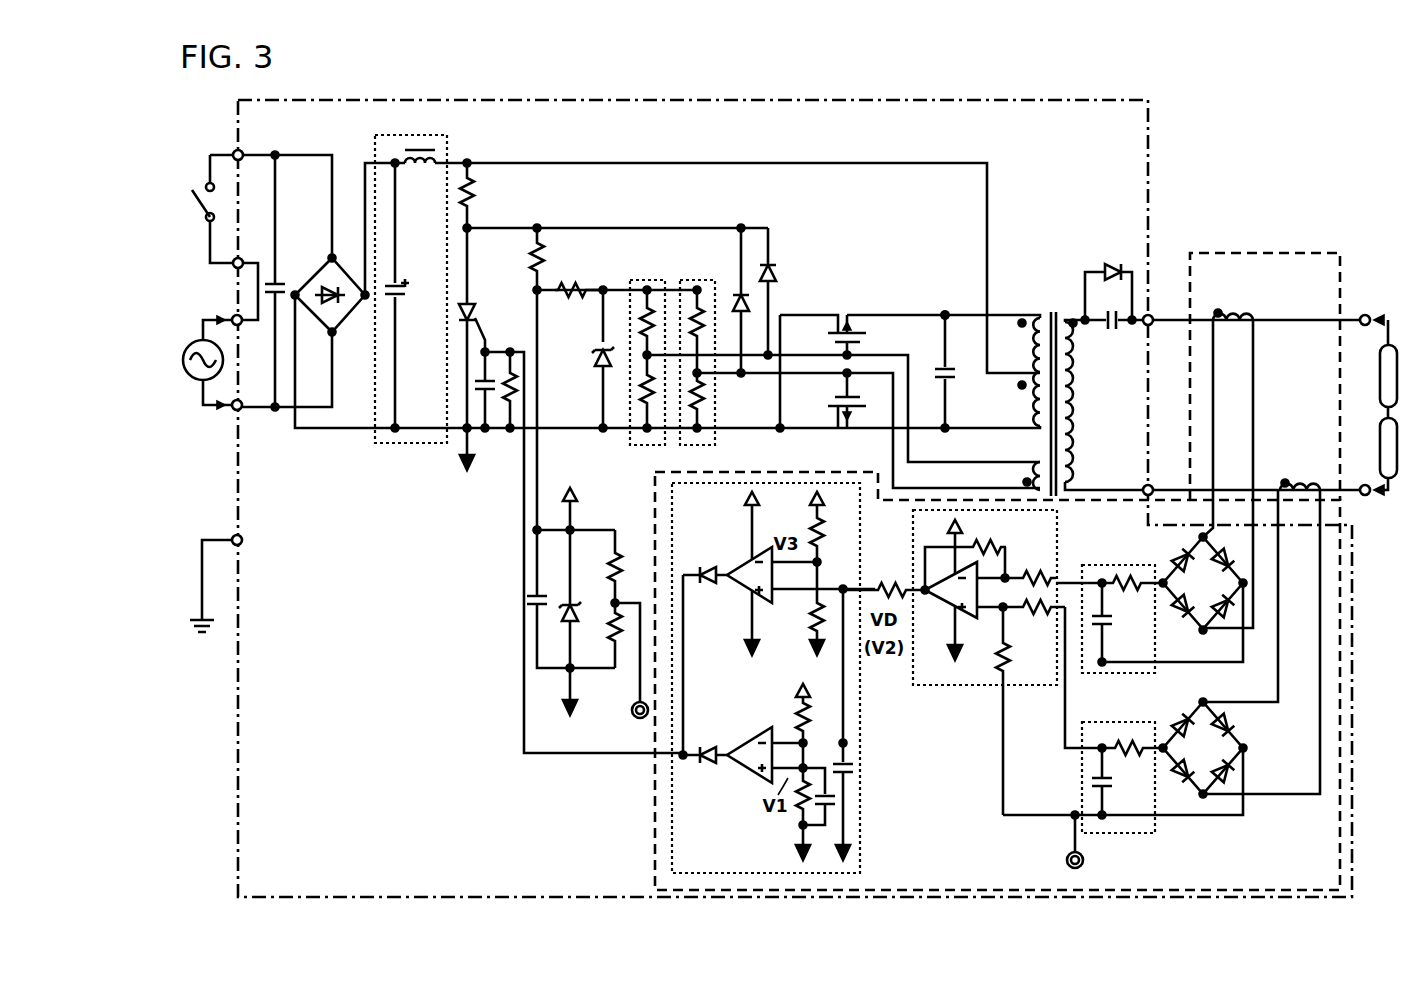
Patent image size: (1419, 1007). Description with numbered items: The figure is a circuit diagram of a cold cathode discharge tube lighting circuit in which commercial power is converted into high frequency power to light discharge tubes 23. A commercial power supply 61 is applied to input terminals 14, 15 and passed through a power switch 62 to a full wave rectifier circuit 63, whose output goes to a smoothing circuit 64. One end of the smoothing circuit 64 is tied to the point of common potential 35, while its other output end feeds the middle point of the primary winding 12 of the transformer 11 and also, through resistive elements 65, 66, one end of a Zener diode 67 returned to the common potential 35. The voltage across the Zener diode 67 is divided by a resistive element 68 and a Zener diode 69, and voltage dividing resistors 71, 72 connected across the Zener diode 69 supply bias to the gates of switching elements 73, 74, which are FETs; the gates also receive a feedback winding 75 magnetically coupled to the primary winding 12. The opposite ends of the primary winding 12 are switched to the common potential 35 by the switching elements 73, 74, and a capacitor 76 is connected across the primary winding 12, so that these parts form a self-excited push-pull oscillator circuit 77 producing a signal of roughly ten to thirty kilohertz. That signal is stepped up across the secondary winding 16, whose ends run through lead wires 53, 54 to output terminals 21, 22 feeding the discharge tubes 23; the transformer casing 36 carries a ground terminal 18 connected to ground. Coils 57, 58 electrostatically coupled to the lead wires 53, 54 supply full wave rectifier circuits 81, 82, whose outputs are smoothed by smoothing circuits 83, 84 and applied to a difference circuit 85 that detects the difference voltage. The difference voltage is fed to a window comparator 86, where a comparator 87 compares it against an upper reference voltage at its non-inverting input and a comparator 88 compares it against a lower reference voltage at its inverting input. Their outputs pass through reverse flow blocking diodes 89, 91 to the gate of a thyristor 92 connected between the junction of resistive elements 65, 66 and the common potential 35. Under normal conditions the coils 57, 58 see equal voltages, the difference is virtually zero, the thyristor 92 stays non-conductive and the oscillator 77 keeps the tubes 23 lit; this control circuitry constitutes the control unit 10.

The control unit 10 is at (655, 800).
The leakage transformer 11 is at (1053, 310).
The primary winding 12 is at (1030, 318).
The input terminal 14 is at (244, 327).
The input terminal 15 is at (243, 412).
The secondary winding 16 is at (1082, 424).
The ground terminal 18 is at (233, 535).
The output terminal 21 is at (1367, 313).
The output terminal 22 is at (1368, 508).
The discharge tubes 23 is at (1378, 382).
The point of common potential 35 is at (472, 440).
The transformer casing 36 is at (1152, 210).
The lead wire 53 is at (1290, 322).
The lead wire 54 is at (1330, 486).
The coil 57 is at (1228, 312).
The coil 58 is at (1297, 481).
The commercial power supply 61 is at (192, 380).
The power switch 62 is at (205, 228).
The full wave rectifier circuit 63 is at (340, 312).
The smoothing circuit 64 is at (428, 445).
The resistive element 65 is at (478, 193).
The resistive element 66 is at (532, 258).
The Zener diode 67 is at (575, 603).
The resistive element 68 is at (575, 288).
The Zener diode 69 is at (598, 374).
The voltage dividing resistor 71 is at (652, 285).
The voltage dividing resistor 72 is at (703, 283).
The switching element 73 is at (845, 315).
The switching element 74 is at (850, 440).
The feedback winding 75 is at (1036, 462).
The capacitor 76 is at (953, 380).
The self-excited oscillator circuit 77 is at (935, 303).
The full wave rectifier circuit 81 is at (1195, 617).
The full wave rectifier circuit 82 is at (1248, 738).
The smoothing circuit 83 is at (1122, 565).
The smoothing circuit 84 is at (1122, 720).
The difference circuit 85 is at (965, 688).
The window comparator 86 is at (862, 810).
The comparator 87 is at (740, 592).
The comparator 88 is at (757, 742).
The reverse flow blocking diode 89 is at (708, 565).
The reverse flow blocking diode 91 is at (708, 765).
The thyristor 92 is at (476, 312).